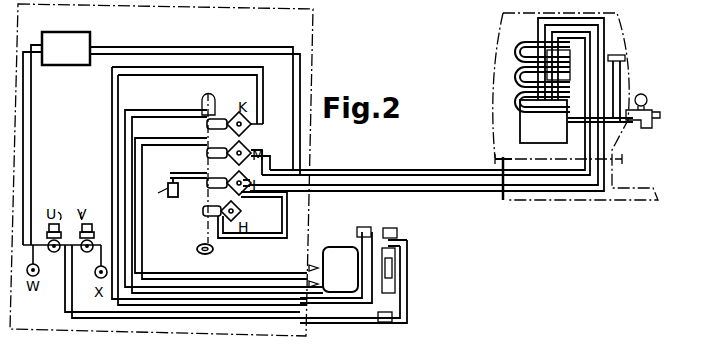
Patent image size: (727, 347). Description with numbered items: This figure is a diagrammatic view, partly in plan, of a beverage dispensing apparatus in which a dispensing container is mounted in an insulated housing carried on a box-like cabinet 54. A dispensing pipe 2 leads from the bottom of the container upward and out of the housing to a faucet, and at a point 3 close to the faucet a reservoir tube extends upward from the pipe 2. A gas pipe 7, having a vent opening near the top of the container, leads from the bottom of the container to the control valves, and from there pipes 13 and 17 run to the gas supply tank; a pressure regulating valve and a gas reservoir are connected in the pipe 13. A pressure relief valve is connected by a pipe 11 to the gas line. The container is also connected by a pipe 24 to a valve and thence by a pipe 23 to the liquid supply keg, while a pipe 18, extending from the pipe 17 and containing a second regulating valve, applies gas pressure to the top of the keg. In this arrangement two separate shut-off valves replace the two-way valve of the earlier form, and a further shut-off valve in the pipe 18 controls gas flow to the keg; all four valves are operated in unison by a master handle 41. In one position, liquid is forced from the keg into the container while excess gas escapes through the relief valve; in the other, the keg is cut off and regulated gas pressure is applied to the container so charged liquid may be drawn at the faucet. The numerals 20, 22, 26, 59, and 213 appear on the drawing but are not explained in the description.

The dispensing pipe 2 is at (519, 78).
The point close to the faucet 3 is at (620, 126).
The gas pipe 7 is at (538, 26).
The relief valve pipe 11 is at (195, 163).
The gas supply pipe 13 is at (135, 52).
The gas tank pipe 17 is at (65, 318).
The supply container gas pipe 18 is at (108, 181).
The wire to switch K 20 is at (172, 108).
The wire to solenoid S 22 is at (307, 266).
The liquid supply pipe 23 is at (172, 137).
The liquid transfer pipe 24 is at (271, 159).
The thermostat box 26 is at (543, 121).
The master handle 41 is at (198, 246).
The cabinet 54 is at (507, 200).
The pipe line 59 is at (495, 159).
The wire to switch H 213 is at (252, 237).